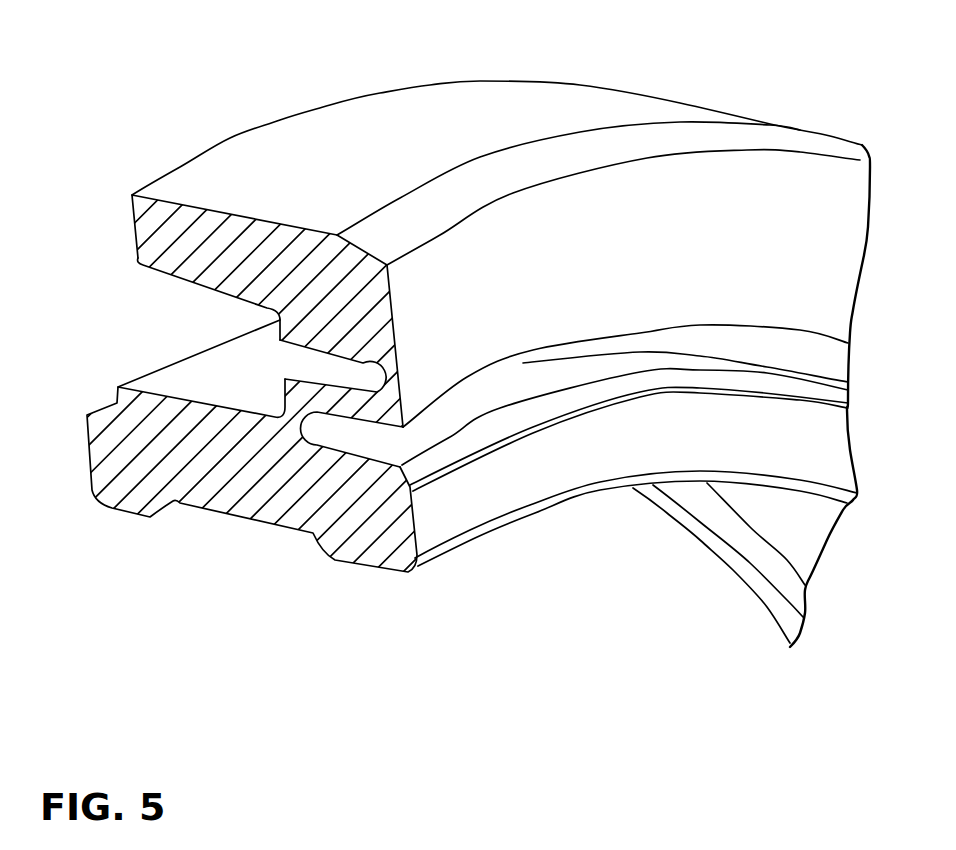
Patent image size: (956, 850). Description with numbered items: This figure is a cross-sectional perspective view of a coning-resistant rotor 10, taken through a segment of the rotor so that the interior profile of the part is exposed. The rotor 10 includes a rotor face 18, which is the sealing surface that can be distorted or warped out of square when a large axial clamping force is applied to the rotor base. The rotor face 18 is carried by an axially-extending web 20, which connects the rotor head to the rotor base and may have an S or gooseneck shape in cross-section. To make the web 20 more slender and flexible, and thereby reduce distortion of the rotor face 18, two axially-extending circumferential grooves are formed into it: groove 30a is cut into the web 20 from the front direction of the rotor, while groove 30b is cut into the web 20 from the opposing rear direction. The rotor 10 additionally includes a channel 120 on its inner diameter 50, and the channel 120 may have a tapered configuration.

The coning-resistant rotor 10 is at (142, 115).
The rotor face 18 is at (630, 222).
The axially-extending web 20 is at (337, 310).
The axially-extending circumferential groove 30a is at (384, 440).
The axially-extending circumferential groove 30b is at (292, 366).
The inner diameter 50 is at (272, 523).
The channel 120 is at (205, 525).